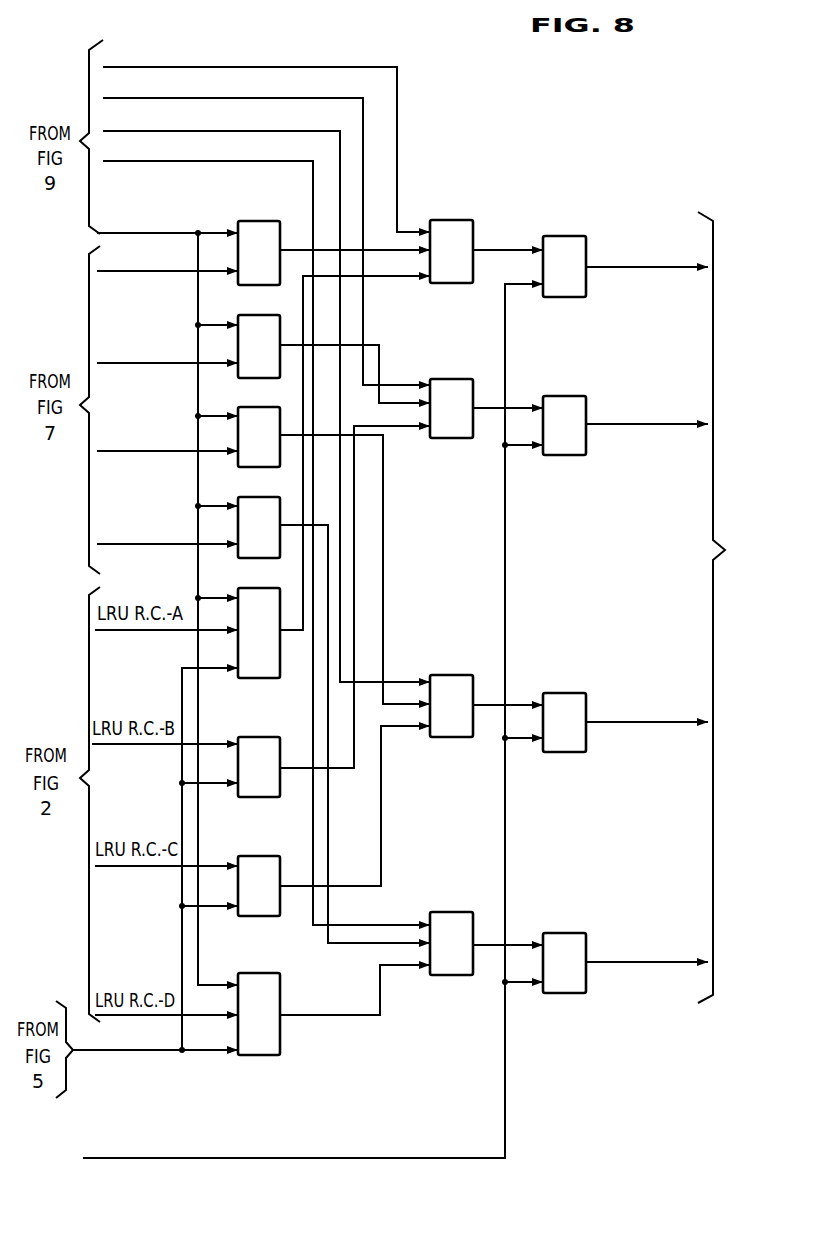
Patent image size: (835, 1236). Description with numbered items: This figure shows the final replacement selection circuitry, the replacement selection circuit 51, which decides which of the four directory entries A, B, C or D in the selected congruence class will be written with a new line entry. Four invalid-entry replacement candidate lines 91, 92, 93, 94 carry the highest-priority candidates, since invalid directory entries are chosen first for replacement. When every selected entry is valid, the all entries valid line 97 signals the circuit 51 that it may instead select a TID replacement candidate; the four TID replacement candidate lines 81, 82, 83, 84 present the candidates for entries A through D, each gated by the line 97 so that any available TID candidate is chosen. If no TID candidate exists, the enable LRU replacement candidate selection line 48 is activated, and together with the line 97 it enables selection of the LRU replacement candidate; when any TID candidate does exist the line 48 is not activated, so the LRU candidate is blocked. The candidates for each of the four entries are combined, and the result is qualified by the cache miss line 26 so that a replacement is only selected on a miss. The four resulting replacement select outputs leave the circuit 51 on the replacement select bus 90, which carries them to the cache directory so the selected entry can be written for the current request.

The I REPL CND-A line 91 is at (308, 64).
The I REPL CND-B line 92 is at (322, 98).
The I REPL CND-C line 93 is at (265, 130).
The I REPL CND-D line 94 is at (278, 163).
The all entries valid line 97 is at (210, 233).
The TID replacement candidate A line 81 is at (172, 272).
The TID replacement candidate B line 82 is at (172, 364).
The TID replacement candidate C line 83 is at (172, 452).
The TID replacement candidate D line 84 is at (168, 545).
The enable LRU replacement candidate selection line 48 is at (86, 1052).
The cache miss line 26 is at (410, 1157).
The replacement selection circuit 51 is at (609, 1066).
The replacement select bus 90 is at (684, 607).